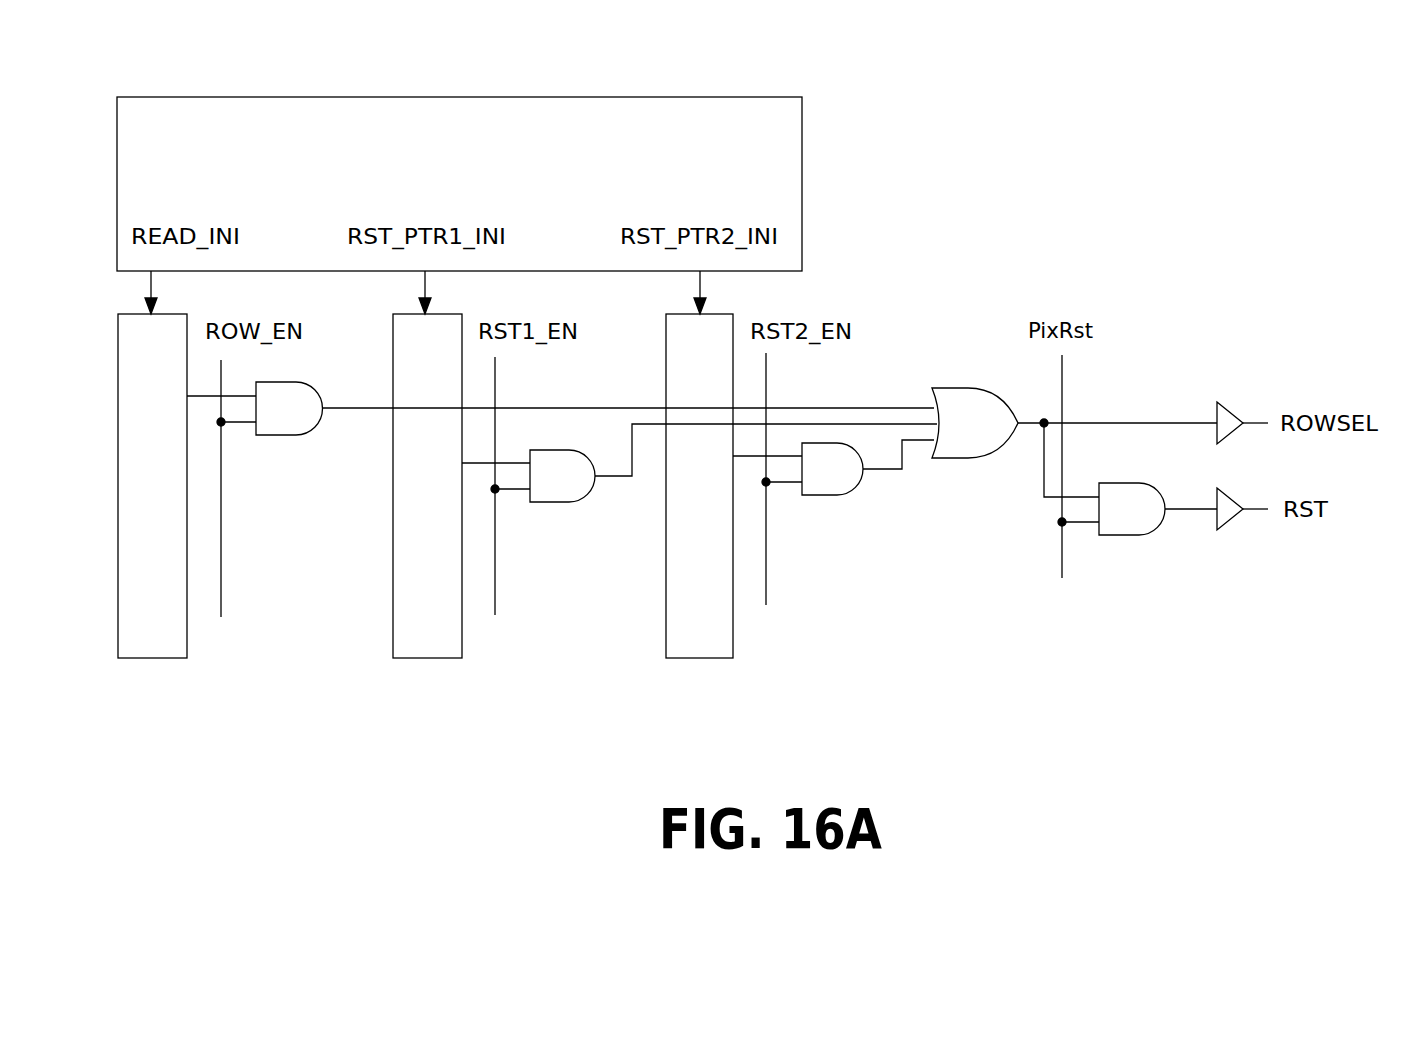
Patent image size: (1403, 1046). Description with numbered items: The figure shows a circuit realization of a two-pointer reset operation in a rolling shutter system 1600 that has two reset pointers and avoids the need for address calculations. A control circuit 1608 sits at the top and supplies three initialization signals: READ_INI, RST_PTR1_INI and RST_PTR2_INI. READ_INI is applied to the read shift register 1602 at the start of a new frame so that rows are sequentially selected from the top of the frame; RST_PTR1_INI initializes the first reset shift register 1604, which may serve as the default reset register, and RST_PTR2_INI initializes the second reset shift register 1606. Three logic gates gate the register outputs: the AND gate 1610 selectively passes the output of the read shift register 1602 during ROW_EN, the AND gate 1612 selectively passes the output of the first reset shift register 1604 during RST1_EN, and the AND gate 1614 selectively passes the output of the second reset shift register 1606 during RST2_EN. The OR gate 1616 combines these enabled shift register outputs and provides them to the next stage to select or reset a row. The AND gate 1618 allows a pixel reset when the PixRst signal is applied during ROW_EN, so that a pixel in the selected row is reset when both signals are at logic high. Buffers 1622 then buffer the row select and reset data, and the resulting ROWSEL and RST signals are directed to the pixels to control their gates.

The rolling shutter system 1600 is at (1162, 86).
The read shift register 1602 is at (153, 658).
The first reset shift register 1604 is at (428, 658).
The second reset shift register 1606 is at (700, 658).
The control circuit 1608 is at (802, 180).
The AND gate 1610 is at (270, 435).
The AND gate 1612 is at (545, 502).
The AND gate 1614 is at (815, 495).
The OR gate 1616 is at (957, 388).
The AND gate 1618 is at (1112, 535).
The buffer 1622 is at (1227, 406).